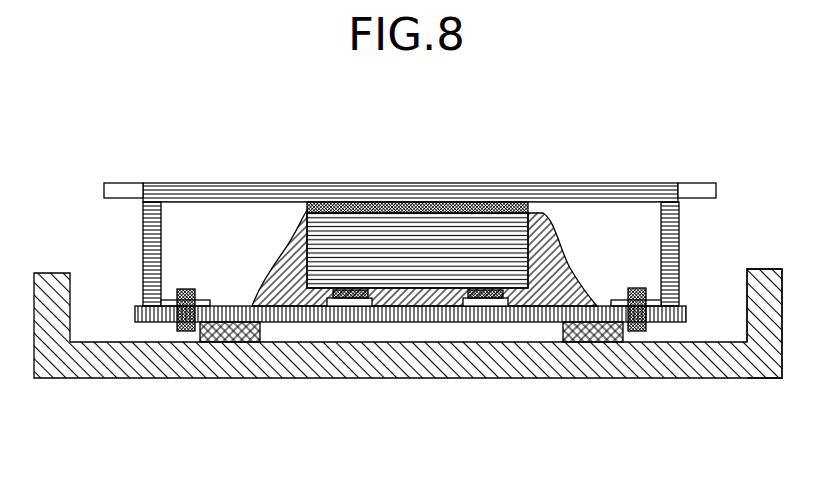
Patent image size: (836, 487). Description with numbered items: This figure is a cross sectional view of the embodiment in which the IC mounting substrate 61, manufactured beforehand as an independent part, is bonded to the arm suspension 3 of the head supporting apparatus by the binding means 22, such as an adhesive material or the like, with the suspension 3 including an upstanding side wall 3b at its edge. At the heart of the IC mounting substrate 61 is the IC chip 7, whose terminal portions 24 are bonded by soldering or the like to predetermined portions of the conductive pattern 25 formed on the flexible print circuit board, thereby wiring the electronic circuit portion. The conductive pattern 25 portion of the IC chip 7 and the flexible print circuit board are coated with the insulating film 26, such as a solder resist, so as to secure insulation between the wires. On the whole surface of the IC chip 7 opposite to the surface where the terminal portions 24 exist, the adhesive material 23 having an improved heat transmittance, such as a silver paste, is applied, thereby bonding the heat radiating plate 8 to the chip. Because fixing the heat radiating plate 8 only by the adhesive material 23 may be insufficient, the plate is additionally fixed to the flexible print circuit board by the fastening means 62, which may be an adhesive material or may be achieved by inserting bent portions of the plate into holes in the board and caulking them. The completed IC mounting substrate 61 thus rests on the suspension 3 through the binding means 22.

The arm suspension 3 is at (670, 366).
The side wall of base 3b is at (742, 378).
The IC chip 7 is at (483, 232).
The heat radiating plate 8 is at (578, 190).
The binding means 22 is at (235, 343).
The adhesive material 23 is at (383, 202).
The terminal portions 24 is at (339, 298).
The conductive pattern 25 is at (369, 300).
The insulating film 26 is at (562, 258).
The IC mounting substrate 61 is at (410, 184).
The fastening means 62 is at (185, 332).